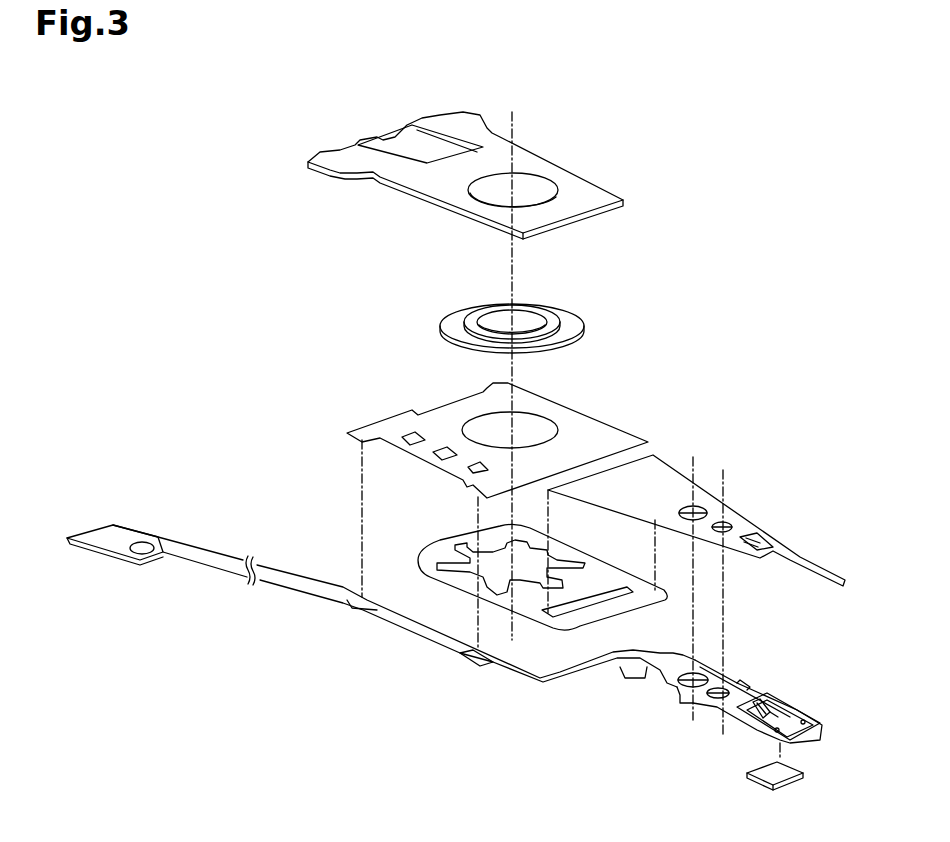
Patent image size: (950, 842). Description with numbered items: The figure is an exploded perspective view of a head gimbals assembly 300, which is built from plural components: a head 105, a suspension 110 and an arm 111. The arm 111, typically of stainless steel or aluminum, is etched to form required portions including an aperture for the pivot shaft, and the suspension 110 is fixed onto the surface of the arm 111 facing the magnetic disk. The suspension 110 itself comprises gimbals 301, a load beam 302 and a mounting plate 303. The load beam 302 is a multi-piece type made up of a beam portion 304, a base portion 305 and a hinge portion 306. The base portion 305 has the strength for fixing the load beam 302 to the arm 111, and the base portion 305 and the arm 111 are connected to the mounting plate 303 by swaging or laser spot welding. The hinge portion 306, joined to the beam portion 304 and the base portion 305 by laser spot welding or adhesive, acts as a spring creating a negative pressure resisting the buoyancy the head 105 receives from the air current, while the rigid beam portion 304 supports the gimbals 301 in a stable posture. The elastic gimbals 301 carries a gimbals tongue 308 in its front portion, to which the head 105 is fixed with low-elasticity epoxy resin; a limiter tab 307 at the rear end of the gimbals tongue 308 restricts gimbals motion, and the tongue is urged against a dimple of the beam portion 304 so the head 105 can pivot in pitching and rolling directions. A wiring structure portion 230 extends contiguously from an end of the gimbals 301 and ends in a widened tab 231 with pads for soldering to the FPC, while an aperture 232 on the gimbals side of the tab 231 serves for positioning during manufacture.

The head gimbals assembly 300 is at (708, 213).
The suspension 110 is at (712, 402).
The arm 111 is at (547, 165).
The mounting plate 303 is at (557, 322).
The base portion 305 is at (592, 420).
The load beam 302 is at (670, 447).
The beam portion 304 is at (743, 520).
The hinge portion 306 is at (437, 542).
The wiring structure portion 230 is at (443, 637).
The tab 231 is at (93, 537).
The aperture 232 is at (147, 543).
The gimbals 301 is at (717, 707).
The limiter tab 307 is at (765, 695).
The gimbals tongue 308 is at (807, 712).
The head 105 is at (773, 775).